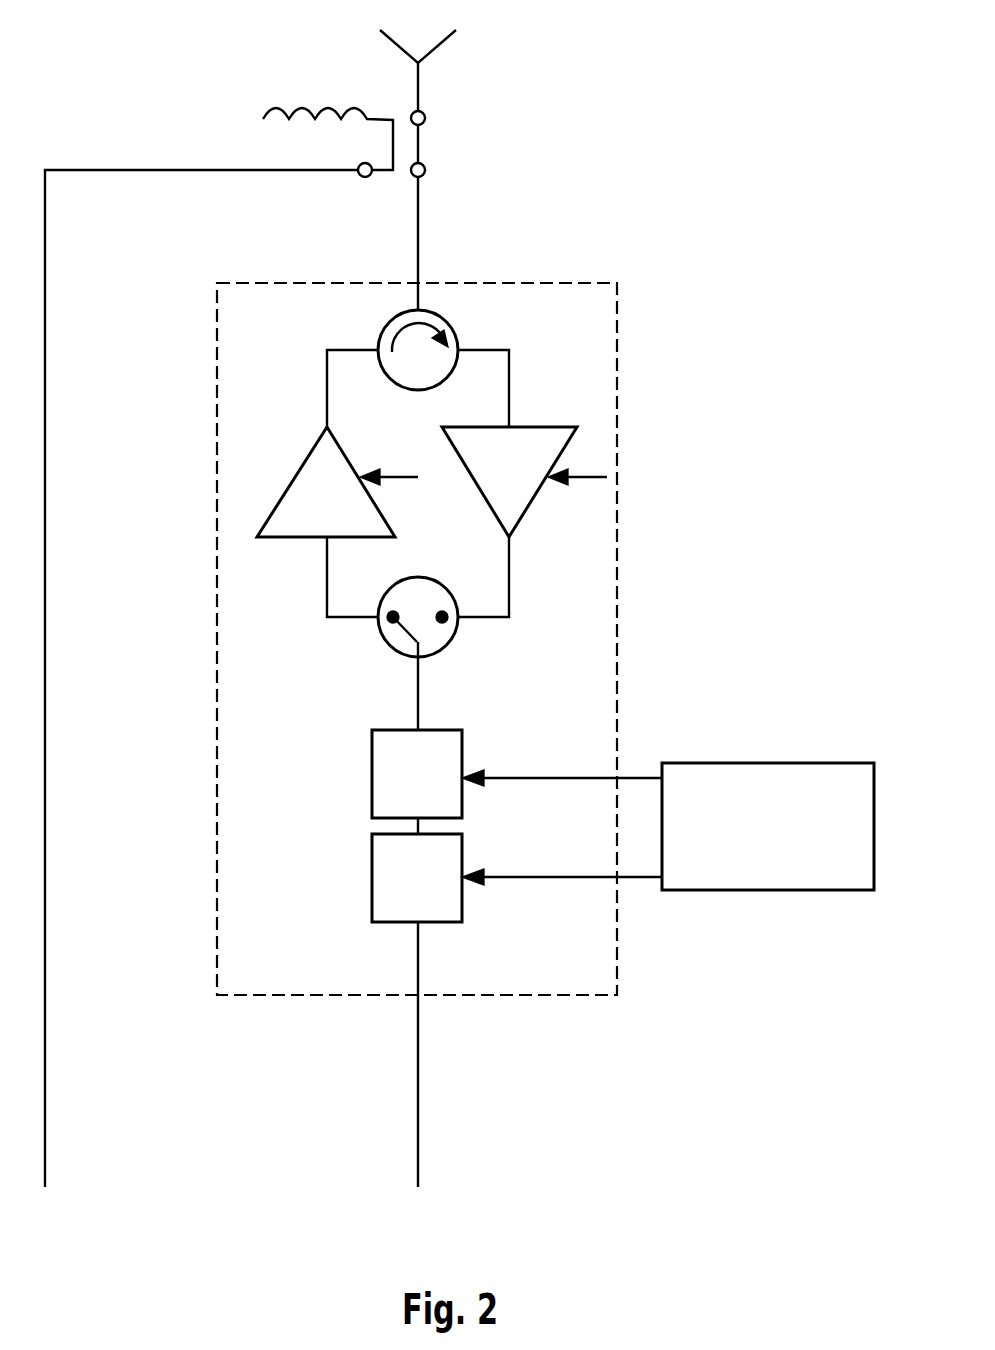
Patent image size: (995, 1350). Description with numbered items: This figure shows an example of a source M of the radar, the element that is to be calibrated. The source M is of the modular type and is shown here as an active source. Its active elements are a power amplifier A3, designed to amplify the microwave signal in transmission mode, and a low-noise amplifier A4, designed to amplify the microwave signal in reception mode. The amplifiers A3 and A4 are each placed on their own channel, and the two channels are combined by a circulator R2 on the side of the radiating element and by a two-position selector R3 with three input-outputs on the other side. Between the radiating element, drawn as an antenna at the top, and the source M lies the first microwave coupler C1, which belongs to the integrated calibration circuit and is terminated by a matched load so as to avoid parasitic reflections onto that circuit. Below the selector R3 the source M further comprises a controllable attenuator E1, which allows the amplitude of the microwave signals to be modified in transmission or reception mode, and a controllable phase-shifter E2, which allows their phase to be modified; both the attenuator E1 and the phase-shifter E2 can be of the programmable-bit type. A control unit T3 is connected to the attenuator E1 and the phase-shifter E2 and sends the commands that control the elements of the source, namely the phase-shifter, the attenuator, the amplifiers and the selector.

The first microwave coupler C1 is at (433, 145).
The source M is at (617, 420).
The circulator R2 is at (457, 326).
The two-position selector R3 is at (445, 650).
The power amplifier A3 is at (298, 476).
The low-noise amplifier A4 is at (542, 483).
The controllable attenuator E1 is at (372, 772).
The controllable phase-shifter E2 is at (372, 890).
The control unit T3 is at (770, 762).